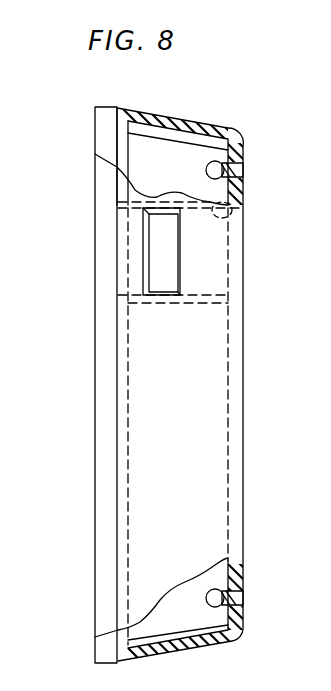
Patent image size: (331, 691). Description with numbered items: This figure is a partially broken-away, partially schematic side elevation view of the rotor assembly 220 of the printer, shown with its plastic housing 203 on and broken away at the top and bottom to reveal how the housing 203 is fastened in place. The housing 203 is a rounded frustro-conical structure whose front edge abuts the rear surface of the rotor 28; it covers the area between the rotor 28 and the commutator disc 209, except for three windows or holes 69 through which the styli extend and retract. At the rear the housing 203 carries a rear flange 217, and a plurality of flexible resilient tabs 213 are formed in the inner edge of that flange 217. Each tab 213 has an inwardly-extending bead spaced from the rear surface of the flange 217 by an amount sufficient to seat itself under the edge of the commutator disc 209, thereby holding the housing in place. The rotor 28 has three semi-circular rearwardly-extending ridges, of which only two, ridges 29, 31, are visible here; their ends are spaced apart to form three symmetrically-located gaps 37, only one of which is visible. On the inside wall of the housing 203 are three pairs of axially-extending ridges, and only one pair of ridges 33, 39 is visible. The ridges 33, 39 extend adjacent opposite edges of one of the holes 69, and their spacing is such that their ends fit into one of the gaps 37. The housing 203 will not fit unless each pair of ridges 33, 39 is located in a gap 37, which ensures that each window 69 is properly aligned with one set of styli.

The rotor 28 is at (103, 125).
The ridge 29 is at (122, 151).
The rotor assembly 220 is at (173, 110).
The housing 203 is at (214, 128).
The commutator disc 209 is at (244, 569).
The rear flange 217 is at (244, 153).
The tab 213 is at (233, 168).
The ridge 33 is at (233, 212).
The hole 69 is at (162, 240).
The gap 37 is at (123, 270).
The ridge 39 is at (218, 299).
The ridge 31 is at (122, 492).